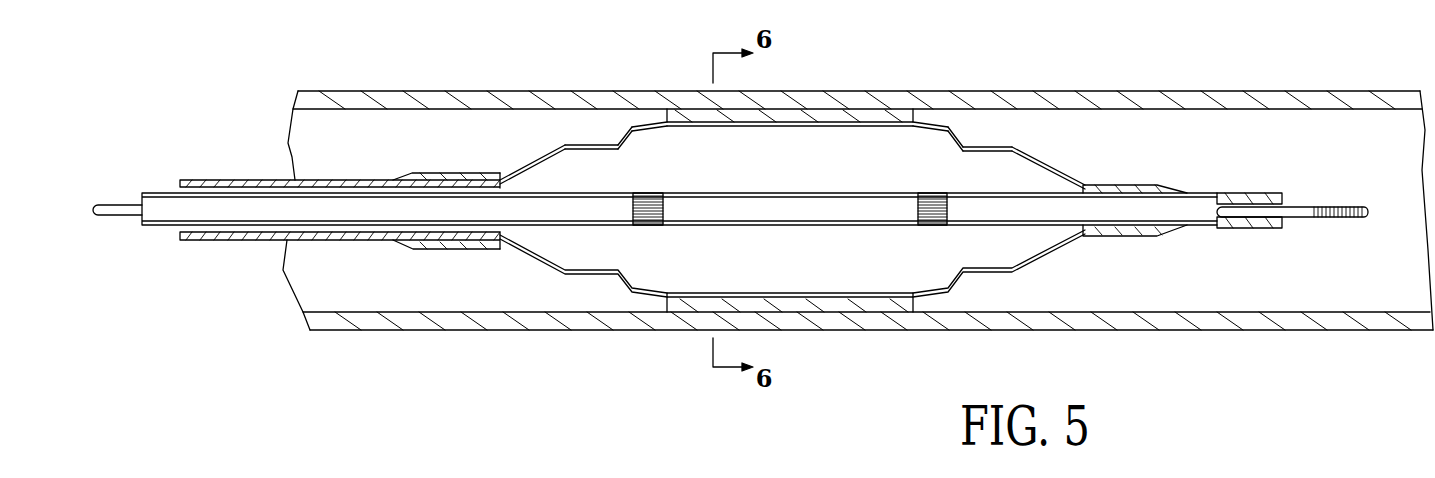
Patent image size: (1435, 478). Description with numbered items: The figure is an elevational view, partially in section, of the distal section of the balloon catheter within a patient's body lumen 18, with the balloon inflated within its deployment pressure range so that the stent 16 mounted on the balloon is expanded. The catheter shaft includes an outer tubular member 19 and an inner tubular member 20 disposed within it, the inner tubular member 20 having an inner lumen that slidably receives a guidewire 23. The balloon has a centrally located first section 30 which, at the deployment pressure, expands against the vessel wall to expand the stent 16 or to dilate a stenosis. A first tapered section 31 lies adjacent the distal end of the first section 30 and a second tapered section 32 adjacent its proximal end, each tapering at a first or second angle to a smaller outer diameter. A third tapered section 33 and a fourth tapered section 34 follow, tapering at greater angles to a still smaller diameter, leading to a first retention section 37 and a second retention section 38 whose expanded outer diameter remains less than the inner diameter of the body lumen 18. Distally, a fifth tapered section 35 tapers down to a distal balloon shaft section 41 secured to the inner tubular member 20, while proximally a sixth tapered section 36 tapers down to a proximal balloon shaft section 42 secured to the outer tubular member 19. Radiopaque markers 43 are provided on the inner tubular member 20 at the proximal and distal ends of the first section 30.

The stent 16 is at (825, 308).
The body lumen 18 is at (312, 273).
The outer tubular member 19 is at (215, 243).
The inner tubular member 20 is at (557, 228).
The guidewire 23 is at (1316, 226).
The first section 30 is at (795, 118).
The first tapered section 31 is at (928, 118).
The second tapered section 32 is at (650, 120).
The third tapered section 33 is at (962, 140).
The fourth tapered section 34 is at (625, 133).
The fifth tapered section 35 is at (1055, 168).
The sixth tapered section 36 is at (517, 167).
The first retention section 37 is at (1005, 145).
The second retention section 38 is at (585, 145).
The distal balloon shaft section 41 is at (1130, 185).
The proximal balloon shaft section 42 is at (437, 170).
The radiopaque markers 43 is at (925, 229).